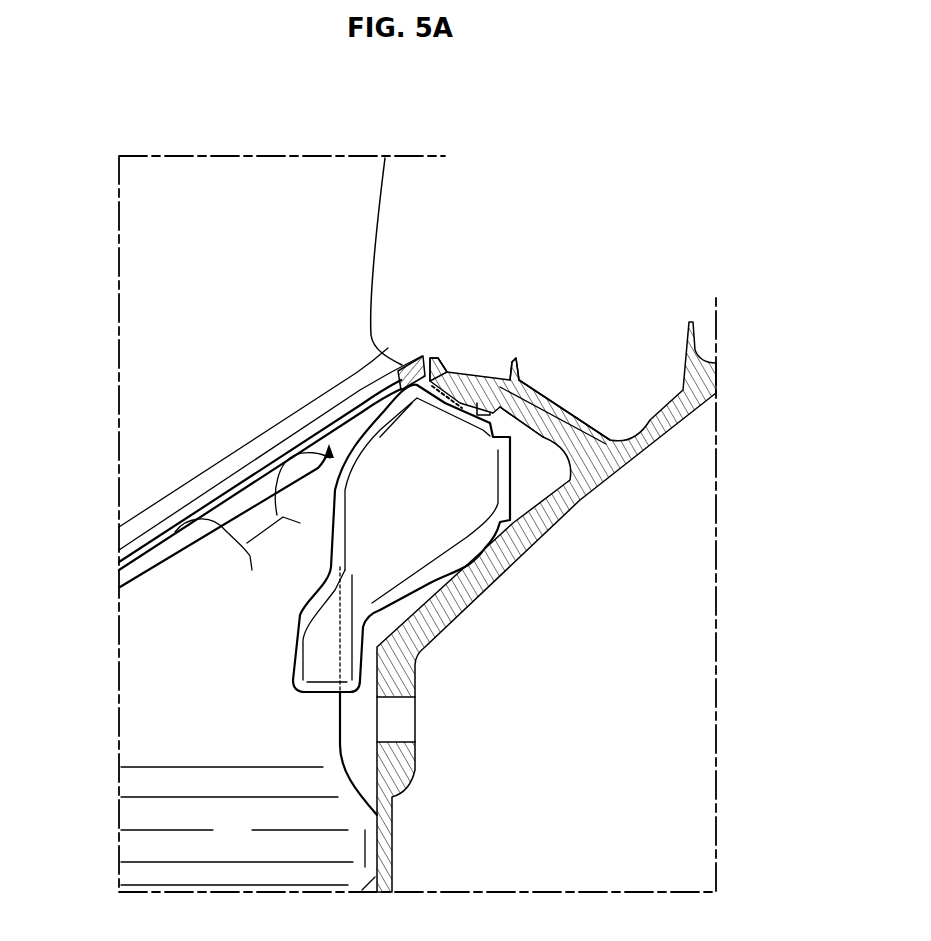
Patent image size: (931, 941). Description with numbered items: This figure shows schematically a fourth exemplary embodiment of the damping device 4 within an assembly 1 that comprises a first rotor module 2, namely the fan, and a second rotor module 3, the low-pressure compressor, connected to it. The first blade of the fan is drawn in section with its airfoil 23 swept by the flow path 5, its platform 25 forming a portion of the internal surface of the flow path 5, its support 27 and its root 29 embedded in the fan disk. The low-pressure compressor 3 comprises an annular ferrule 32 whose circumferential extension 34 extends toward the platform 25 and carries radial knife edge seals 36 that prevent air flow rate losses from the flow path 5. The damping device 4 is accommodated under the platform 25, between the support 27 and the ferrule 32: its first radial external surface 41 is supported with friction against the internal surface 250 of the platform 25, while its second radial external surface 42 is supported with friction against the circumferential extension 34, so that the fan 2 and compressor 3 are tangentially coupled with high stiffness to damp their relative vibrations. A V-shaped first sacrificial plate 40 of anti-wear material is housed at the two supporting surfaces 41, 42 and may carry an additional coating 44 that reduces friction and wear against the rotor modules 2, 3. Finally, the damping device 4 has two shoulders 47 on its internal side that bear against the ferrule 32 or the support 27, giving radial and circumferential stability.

The assembly 1 is at (749, 308).
The first rotor module 2 is at (96, 371).
The second rotor module 3 is at (573, 712).
The damping device 4 is at (403, 507).
The flow path 5 is at (528, 232).
The airfoil 23 is at (202, 295).
The platform 25 is at (240, 490).
The internal surface of the platform 250 is at (120, 587).
The support 27 is at (320, 715).
The root 29 is at (220, 842).
The annular ferrule 32 is at (503, 563).
The circumferential extension 34 is at (541, 427).
The radial knife edge seals 36 is at (520, 368).
The first sacrificial plate 40 is at (410, 380).
The first radial external surface 41 is at (371, 409).
The second radial external surface 42 is at (463, 407).
The additional coating 44 is at (463, 395).
The shoulders 47 is at (320, 642).